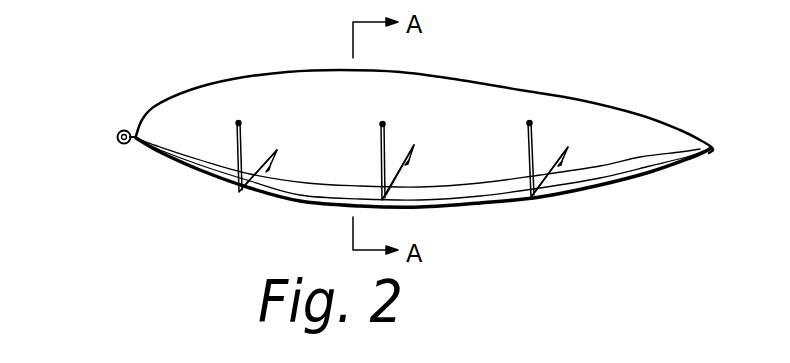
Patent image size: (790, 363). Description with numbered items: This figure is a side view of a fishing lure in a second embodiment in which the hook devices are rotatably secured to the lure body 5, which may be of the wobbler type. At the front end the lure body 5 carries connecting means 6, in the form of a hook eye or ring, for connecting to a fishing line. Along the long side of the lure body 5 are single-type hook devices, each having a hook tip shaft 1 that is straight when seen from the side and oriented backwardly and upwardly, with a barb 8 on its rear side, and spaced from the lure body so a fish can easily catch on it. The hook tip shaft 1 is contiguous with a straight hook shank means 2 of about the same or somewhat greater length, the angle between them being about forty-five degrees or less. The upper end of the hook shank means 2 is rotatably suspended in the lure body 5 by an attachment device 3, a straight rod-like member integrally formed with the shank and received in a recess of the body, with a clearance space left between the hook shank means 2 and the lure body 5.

The hook tip shaft 1 is at (263, 191).
The hook shank means 2 is at (234, 156).
The attachment device 3 is at (237, 121).
The lure body 5 is at (619, 117).
The connecting means 6 is at (124, 129).
The barb 8 is at (258, 166).